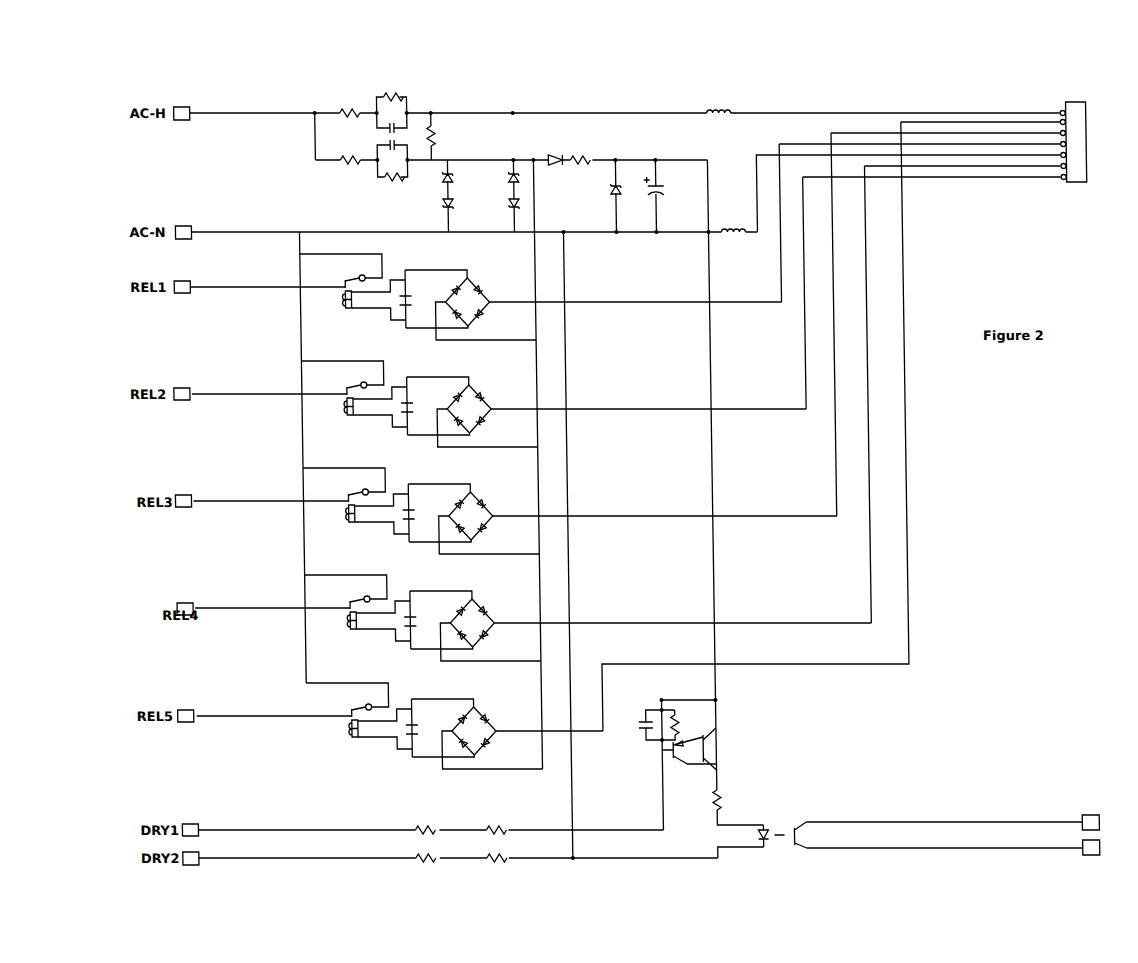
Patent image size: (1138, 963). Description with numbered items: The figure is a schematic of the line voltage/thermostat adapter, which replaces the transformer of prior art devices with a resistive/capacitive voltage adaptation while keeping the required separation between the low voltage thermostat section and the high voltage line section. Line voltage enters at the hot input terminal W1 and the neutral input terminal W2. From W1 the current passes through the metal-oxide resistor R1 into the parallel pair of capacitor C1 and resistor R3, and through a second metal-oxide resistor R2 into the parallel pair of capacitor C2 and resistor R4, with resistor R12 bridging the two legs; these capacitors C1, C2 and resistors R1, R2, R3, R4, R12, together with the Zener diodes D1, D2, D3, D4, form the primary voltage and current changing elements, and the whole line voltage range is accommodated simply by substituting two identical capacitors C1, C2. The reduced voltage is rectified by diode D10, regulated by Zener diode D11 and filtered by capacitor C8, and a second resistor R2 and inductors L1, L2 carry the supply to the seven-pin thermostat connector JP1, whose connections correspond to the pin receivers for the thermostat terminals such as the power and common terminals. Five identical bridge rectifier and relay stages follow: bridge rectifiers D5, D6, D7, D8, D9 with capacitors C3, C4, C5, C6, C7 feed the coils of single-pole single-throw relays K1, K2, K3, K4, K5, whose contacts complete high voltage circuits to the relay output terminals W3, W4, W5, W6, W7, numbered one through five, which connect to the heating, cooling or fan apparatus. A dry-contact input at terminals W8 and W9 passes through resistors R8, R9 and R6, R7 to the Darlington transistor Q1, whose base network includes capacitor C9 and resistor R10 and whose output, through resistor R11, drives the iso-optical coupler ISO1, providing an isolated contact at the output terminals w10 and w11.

The AC-H input terminal W1 is at (181, 105).
The AC-N input terminal W2 is at (183, 224).
The REL1 output terminal W3 is at (184, 279).
The REL2 output terminal W4 is at (184, 386).
The REL3 output terminal W5 is at (190, 498).
The REL4 output terminal W6 is at (189, 605).
The REL5 output terminal W7 is at (189, 708).
The DRY1 terminal W8 is at (190, 823).
The DRY2 terminal W9 is at (191, 851).
The CK1 terminal w10 is at (1107, 816).
The CK2 terminal w11 is at (1108, 856).
The resistor R1 is at (347, 83).
The resistor R2 is at (476, 173).
The resistor R3 is at (388, 81).
The resistor R4 is at (397, 190).
The resistor R6 is at (432, 877).
The resistor R7 is at (502, 877).
The resistor R8 is at (429, 810).
The resistor R9 is at (501, 811).
The resistor R10 is at (693, 719).
The resistor R11 is at (738, 807).
The resistor R12 is at (449, 136).
The capacitor C1 is at (392, 121).
The capacitor C2 is at (392, 153).
The capacitor C3 is at (411, 297).
The capacitor C4 is at (411, 404).
The capacitor C5 is at (411, 511).
The capacitor C6 is at (411, 618).
The capacitor C7 is at (411, 726).
The capacitor C8 is at (673, 196).
The capacitor C9 is at (639, 735).
The Zener diode D1 is at (506, 172).
The Zener diode D2 is at (504, 197).
The Zener diode D3 is at (456, 174).
The Zener diode D4 is at (455, 199).
The bridge rectifier D5 is at (486, 295).
The bridge rectifier D6 is at (487, 402).
The bridge rectifier D7 is at (487, 509).
The bridge rectifier D8 is at (488, 616).
The bridge rectifier D9 is at (492, 724).
The diode D10 is at (550, 146).
The Zener diode D11 is at (581, 196).
The relay K1 is at (345, 306).
The relay K2 is at (355, 413).
The relay K3 is at (356, 520).
The relay K4 is at (361, 627).
The relay K5 is at (365, 733).
The transistor Q1 is at (728, 749).
The iso-optical coupler ISO1 is at (801, 822).
The THERM connector JP1 is at (1092, 145).
The inductor L1 is at (723, 104).
The inductor L2 is at (742, 239).